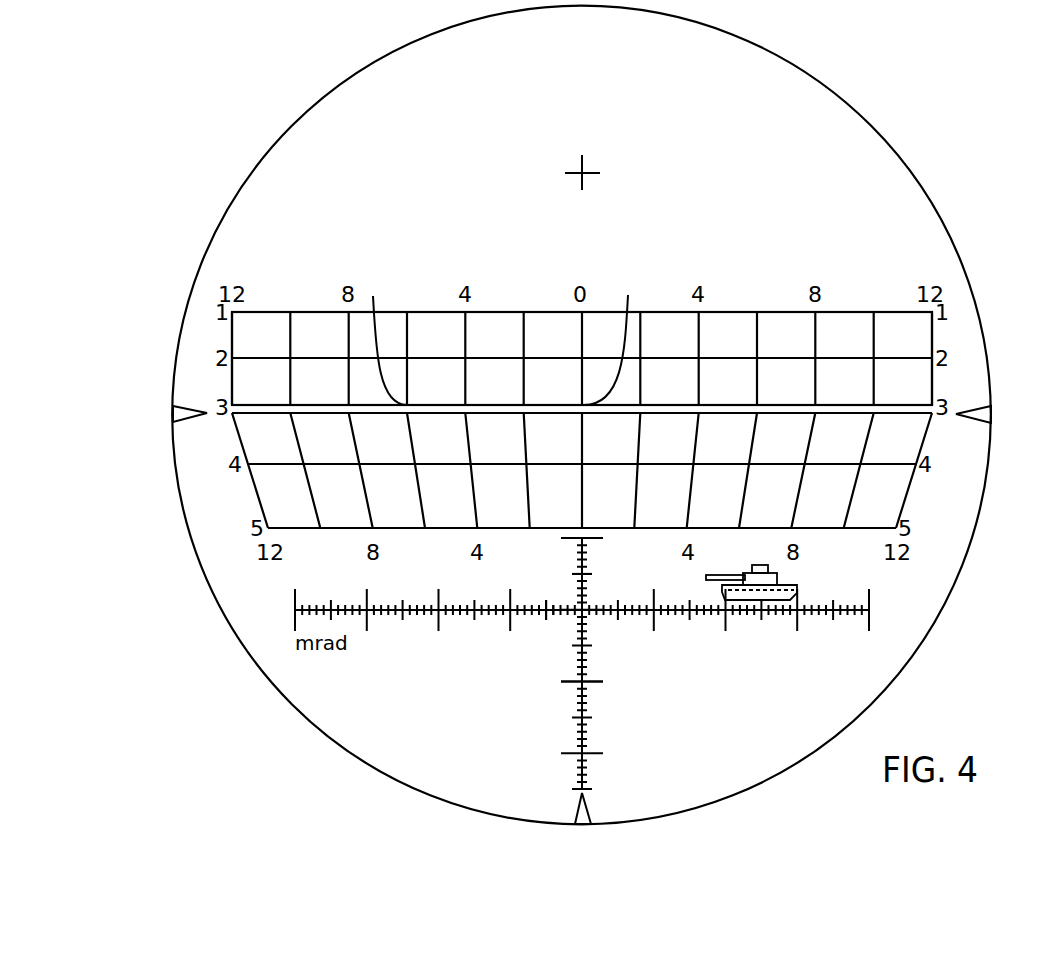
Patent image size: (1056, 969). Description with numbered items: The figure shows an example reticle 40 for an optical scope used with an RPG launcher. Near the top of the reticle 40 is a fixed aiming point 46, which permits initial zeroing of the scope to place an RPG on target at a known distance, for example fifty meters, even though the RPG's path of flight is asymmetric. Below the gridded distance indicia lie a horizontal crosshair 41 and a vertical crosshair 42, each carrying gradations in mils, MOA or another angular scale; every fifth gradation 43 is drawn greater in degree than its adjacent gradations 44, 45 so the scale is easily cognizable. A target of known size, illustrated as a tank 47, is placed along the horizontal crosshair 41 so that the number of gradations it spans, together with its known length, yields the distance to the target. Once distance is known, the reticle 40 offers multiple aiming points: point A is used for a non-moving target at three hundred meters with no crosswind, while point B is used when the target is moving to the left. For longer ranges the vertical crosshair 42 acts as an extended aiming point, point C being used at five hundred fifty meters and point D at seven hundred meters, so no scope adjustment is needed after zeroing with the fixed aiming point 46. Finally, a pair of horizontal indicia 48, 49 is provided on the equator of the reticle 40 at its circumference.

The reticle 40 is at (823, 82).
The horizontal crosshair 41 is at (360, 613).
The vertical crosshair 42 is at (582, 731).
The fifth gradation 43 is at (547, 614).
The gradation 44 is at (554, 600).
The gradation 45 is at (540, 602).
The fixed aiming point 46 is at (587, 170).
The tank 47 is at (777, 578).
The horizontal indicia 48 is at (192, 420).
The horizontal indicia 49 is at (970, 422).
The point A is at (609, 334).
The point B is at (386, 336).
The point C is at (589, 572).
The point D is at (572, 682).